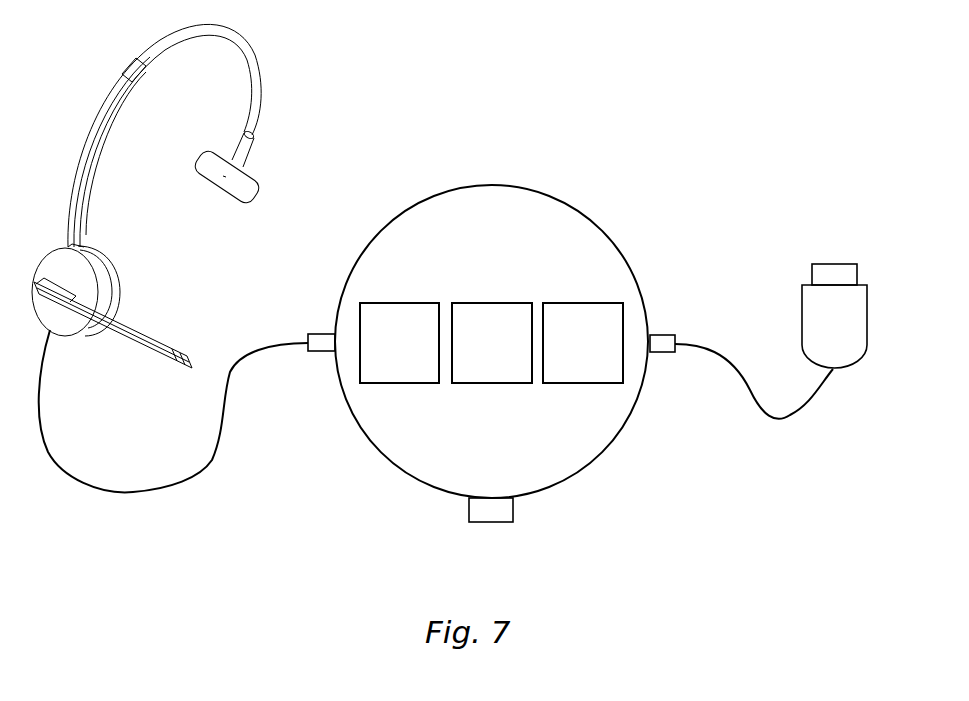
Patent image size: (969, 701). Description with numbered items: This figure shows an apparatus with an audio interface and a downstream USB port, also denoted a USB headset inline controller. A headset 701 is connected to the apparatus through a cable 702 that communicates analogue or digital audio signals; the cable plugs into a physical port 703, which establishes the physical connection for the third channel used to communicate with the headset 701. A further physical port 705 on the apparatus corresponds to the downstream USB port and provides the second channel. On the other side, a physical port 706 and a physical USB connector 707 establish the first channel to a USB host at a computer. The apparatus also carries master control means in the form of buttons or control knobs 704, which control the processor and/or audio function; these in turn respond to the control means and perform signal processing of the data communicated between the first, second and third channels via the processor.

The headset 701 is at (288, 50).
The cable 702 is at (123, 493).
The physical port 703 is at (307, 352).
The buttons or control knobs 704 is at (491, 343).
The physical port 705 is at (513, 522).
The physical port 706 is at (665, 335).
The physical USB connector 707 is at (771, 341).